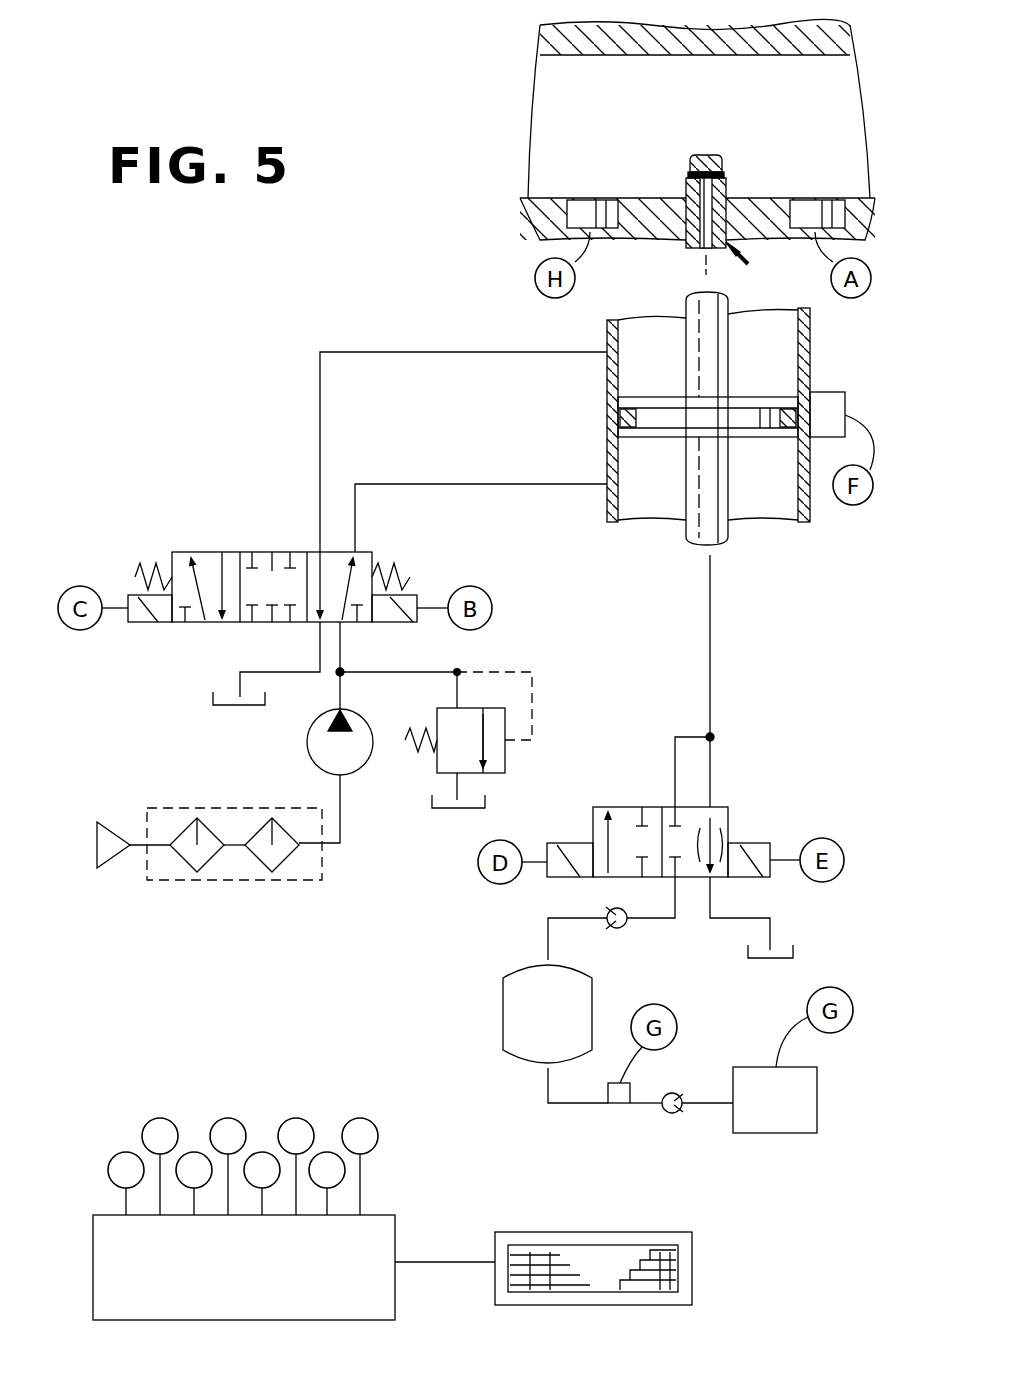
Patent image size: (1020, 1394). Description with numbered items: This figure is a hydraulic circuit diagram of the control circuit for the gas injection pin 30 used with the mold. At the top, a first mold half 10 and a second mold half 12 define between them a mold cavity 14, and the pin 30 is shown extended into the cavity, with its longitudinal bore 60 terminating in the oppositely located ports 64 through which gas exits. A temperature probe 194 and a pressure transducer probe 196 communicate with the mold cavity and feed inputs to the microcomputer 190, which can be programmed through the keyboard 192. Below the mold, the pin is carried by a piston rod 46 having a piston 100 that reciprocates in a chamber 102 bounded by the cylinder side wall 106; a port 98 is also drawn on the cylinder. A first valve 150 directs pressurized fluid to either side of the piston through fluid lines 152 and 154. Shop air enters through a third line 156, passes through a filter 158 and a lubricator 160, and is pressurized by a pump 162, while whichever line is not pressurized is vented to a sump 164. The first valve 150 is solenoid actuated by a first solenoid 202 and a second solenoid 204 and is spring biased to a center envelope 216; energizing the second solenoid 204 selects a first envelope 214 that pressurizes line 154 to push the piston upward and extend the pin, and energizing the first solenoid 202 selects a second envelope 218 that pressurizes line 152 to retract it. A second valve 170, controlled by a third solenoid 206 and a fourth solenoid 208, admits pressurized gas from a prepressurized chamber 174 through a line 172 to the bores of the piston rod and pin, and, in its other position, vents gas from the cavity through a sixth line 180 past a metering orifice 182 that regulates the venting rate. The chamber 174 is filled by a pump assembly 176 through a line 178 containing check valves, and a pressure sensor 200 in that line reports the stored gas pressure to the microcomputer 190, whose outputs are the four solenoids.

The first mold half 10 is at (550, 38).
The mold cavity 14 is at (560, 56).
The second mold half 12 is at (540, 212).
The pressure transducer probe 196 is at (585, 198).
The probe 194 is at (815, 205).
The ports 64 is at (690, 178).
The bore 60 is at (696, 250).
The pin 30 is at (748, 264).
The side wall 106 is at (810, 340).
The piston rod 46 is at (690, 533).
The piston 100 is at (645, 402).
The chamber 102 is at (630, 458).
The position sensor port 98 is at (828, 410).
The fluid line 152 is at (472, 350).
The second line 154 is at (470, 482).
The first valve 150 is at (228, 545).
The second envelope 218 is at (200, 616).
The center envelope 216 is at (272, 548).
The first envelope 214 is at (337, 558).
The first solenoid 202 is at (138, 598).
The second solenoid 204 is at (395, 612).
The sump 164 is at (205, 700).
The pump 162 is at (308, 756).
The filter 158 is at (200, 866).
The lubricator 160 is at (280, 866).
The third line 156 is at (133, 848).
The second valve 170 is at (630, 800).
The metering orifice 182 is at (720, 835).
The line 172 is at (714, 660).
The sixth line 180 is at (712, 760).
The third solenoid 206 is at (555, 870).
The fourth solenoid 208 is at (758, 872).
The prepressurized chamber 174 is at (515, 1018).
The line 178 is at (577, 1106).
The pressure sensor 200 is at (621, 1104).
The pump assembly 176 is at (776, 1112).
The microcomputer 190 is at (372, 1300).
The keyboard 192 is at (622, 1300).